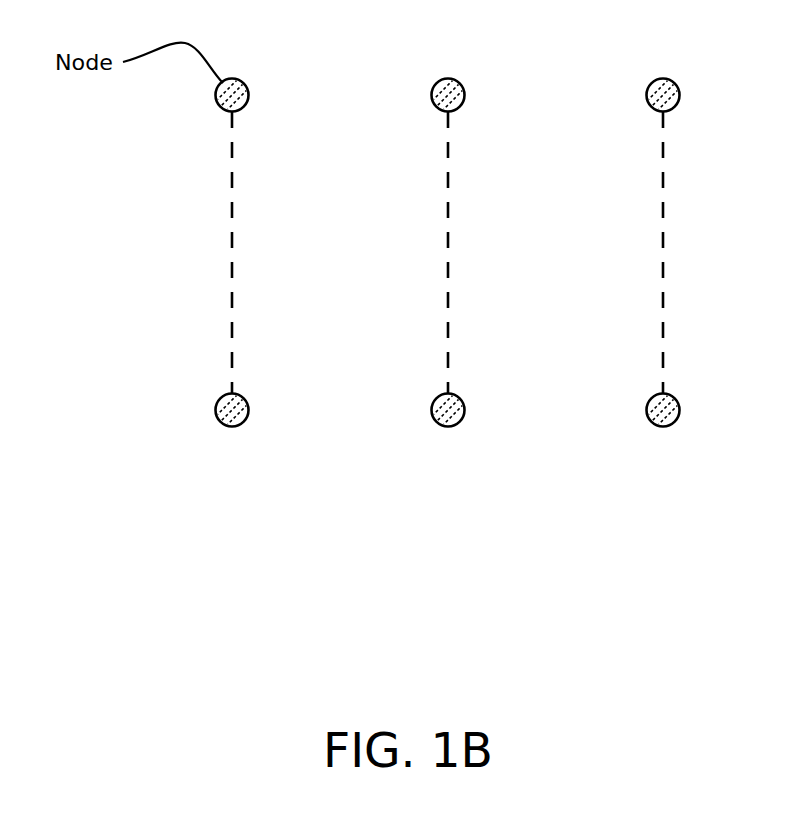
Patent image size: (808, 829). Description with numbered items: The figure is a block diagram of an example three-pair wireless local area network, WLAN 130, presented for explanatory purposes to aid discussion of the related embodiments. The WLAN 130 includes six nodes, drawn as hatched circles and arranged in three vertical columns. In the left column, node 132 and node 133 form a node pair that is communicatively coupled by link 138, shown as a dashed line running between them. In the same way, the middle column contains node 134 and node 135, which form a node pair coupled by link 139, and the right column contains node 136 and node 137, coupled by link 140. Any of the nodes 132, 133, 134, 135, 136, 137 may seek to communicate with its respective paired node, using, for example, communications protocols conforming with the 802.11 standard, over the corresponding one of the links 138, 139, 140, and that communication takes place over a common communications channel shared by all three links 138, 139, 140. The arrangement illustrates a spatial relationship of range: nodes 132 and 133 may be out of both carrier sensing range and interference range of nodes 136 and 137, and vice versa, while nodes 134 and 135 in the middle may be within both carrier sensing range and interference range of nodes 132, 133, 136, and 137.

The WLAN 130 is at (188, 558).
The node 132 is at (242, 83).
The node 133 is at (245, 398).
The node 134 is at (453, 82).
The node 135 is at (460, 398).
The node 136 is at (673, 82).
The node 137 is at (675, 398).
The link 138 is at (232, 265).
The link 139 is at (449, 230).
The link 140 is at (663, 237).